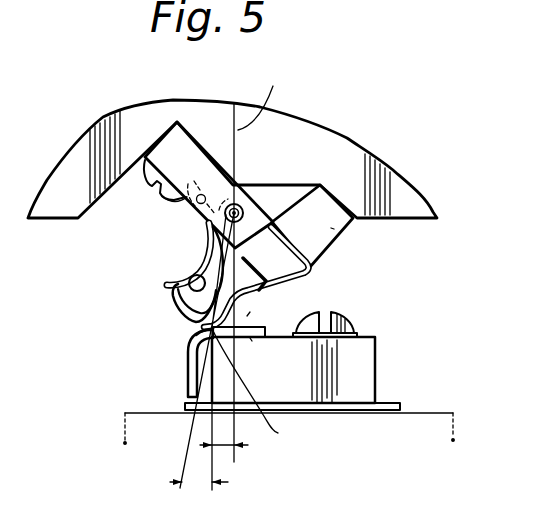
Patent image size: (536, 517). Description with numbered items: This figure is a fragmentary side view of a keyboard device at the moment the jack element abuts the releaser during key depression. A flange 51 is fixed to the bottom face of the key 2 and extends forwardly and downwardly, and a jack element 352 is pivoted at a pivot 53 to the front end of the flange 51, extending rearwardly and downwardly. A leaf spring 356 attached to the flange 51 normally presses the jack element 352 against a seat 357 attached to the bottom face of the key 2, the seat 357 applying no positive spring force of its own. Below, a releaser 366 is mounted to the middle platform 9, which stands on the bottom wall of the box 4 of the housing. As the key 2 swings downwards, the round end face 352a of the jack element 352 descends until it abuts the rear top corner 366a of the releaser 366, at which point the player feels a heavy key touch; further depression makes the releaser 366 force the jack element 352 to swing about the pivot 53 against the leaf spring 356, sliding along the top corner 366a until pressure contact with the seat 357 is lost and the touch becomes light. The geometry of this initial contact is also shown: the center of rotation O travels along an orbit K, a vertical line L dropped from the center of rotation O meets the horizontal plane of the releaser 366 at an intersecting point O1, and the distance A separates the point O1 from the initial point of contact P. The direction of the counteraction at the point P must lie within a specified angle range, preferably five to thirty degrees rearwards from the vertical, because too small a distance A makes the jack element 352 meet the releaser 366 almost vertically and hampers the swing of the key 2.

The key 2 is at (397, 173).
The flange 51 is at (187, 147).
The pivot 53 is at (244, 208).
The center of rotation O is at (244, 205).
The orbit K is at (262, 97).
The seat 357 is at (331, 228).
The jack element 352 is at (315, 284).
The round end face 352a is at (248, 314).
The leaf spring 356 is at (167, 282).
The releaser 366 is at (190, 387).
The rear top corner 366a is at (200, 349).
The middle platform 9 is at (375, 345).
The intersecting point O1 is at (250, 338).
The box 4 is at (453, 417).
The vertical reference line L is at (235, 462).
The initial point of contact P is at (252, 385).
The distance A is at (224, 434).